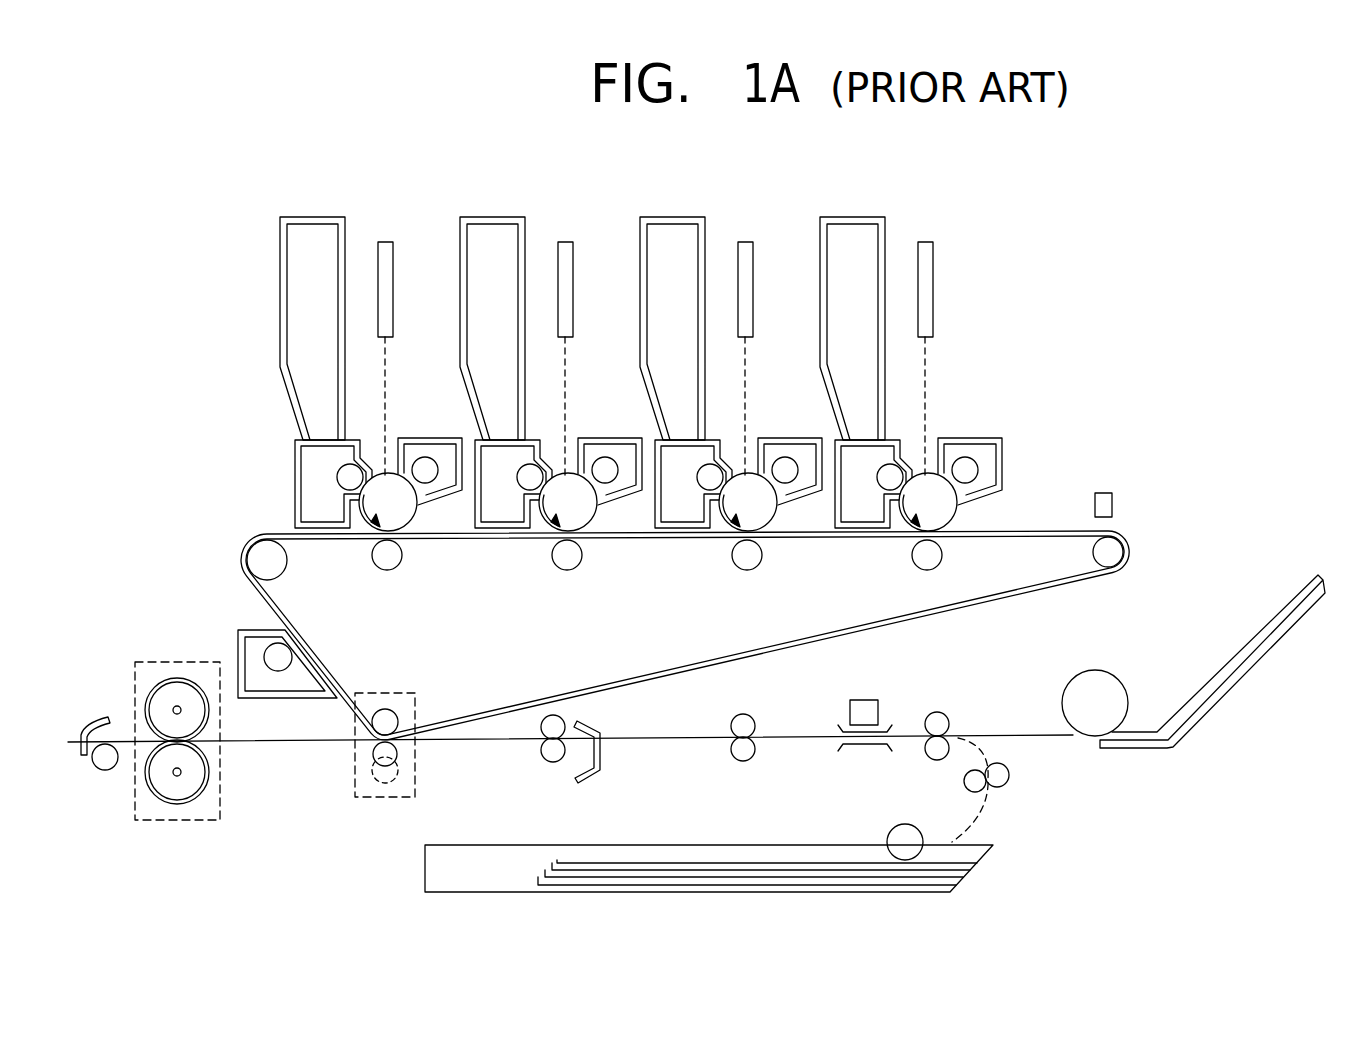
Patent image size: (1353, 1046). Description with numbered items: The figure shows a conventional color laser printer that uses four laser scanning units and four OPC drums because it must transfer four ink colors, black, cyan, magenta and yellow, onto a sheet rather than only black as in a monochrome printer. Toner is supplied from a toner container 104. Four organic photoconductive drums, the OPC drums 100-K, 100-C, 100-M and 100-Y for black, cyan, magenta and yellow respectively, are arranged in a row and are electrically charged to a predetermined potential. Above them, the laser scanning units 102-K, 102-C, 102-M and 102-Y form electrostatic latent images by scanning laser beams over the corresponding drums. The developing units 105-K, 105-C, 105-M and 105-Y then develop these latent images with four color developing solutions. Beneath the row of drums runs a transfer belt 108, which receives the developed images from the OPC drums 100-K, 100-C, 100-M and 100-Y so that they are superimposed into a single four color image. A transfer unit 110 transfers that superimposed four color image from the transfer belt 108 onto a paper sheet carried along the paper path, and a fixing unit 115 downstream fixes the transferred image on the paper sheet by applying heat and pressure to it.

The OPC drum 100-Y is at (382, 470).
The OPC drum 100-M is at (564, 460).
The OPC drum 100-C is at (744, 460).
The OPC drum 100-K is at (925, 460).
The laser scanning unit 102-Y is at (385, 242).
The laser scanning unit 102-M is at (565, 328).
The laser scanning unit 102-C is at (745, 328).
The laser scanning unit 102-K is at (926, 328).
The toner container 104 is at (852, 292).
The developing unit 105-Y is at (295, 484).
The developing unit 105-M is at (467, 441).
The developing unit 105-C is at (647, 441).
The developing unit 105-K is at (827, 441).
The transfer belt 108 is at (932, 615).
The transfer unit 110 is at (385, 800).
The fixing unit 115 is at (177, 662).